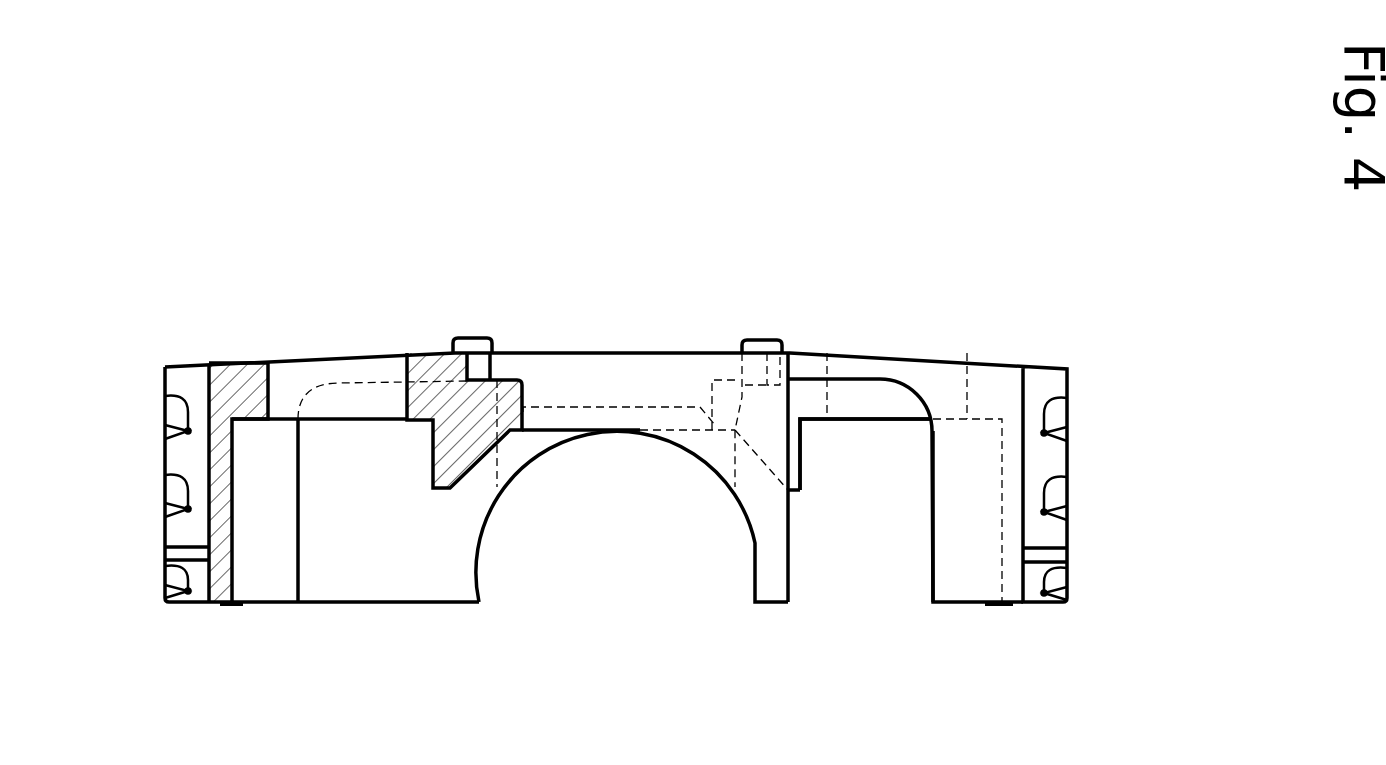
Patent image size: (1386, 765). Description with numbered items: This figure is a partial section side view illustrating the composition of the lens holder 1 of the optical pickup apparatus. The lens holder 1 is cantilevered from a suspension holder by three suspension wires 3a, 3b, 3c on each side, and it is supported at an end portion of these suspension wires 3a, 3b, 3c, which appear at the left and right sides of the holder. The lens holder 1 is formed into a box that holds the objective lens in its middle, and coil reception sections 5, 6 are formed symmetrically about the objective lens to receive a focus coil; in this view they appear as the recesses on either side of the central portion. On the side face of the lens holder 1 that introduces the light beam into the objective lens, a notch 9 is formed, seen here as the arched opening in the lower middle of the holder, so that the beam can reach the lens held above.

The lens holder 1 is at (622, 352).
The suspension wire 3a is at (166, 397).
The suspension wire 3b is at (166, 477).
The suspension wire 3c is at (166, 565).
The coil reception section 5 is at (885, 527).
The coil reception section 6 is at (281, 575).
The notch 9 is at (752, 545).